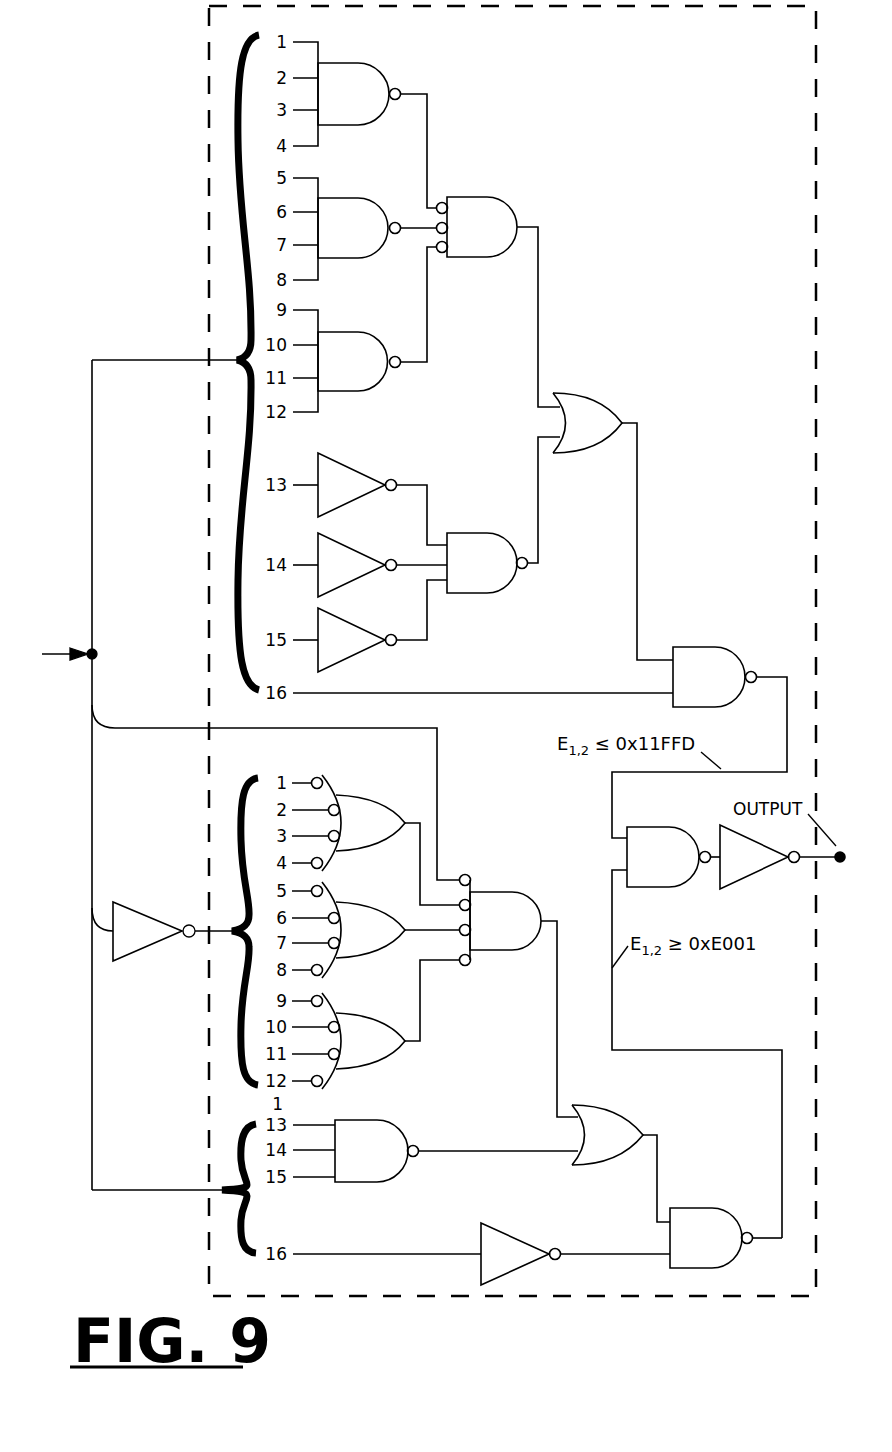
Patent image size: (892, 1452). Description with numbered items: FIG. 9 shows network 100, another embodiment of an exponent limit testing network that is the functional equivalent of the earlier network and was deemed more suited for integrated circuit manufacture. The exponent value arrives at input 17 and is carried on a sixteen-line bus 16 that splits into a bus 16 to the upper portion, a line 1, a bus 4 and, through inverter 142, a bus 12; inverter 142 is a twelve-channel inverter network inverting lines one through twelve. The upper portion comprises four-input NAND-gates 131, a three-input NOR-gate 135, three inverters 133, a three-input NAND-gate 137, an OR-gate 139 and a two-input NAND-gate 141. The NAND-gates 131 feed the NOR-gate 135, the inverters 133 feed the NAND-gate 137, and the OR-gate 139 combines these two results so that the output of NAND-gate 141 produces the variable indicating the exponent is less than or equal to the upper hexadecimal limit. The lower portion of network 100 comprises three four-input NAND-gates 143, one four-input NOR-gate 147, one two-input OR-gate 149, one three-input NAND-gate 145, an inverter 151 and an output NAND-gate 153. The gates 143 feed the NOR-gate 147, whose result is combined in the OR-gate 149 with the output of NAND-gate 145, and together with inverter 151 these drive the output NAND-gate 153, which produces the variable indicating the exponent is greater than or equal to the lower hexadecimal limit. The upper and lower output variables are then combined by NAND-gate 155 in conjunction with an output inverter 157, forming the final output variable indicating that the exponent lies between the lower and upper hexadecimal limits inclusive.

The input signal E1,2 17 is at (62, 650).
The 16-bit bus 16 is at (135, 372).
The single-bit line 1 is at (133, 742).
The 4-bit bus 4 is at (80, 1103).
The 12-bit bus 12 is at (216, 926).
The network 100 is at (779, 46).
The 4-input NAND-gates 131 is at (365, 227).
The inverters 133 is at (370, 562).
The 3-input NOR-gate 135 is at (499, 302).
The 3-input NAND-gate 137 is at (503, 515).
The OR-gate 139 is at (613, 526).
The 2-input NAND-gate 141 is at (540, 742).
The inverter 142 is at (143, 931).
The 4-input NAND-gates 143 is at (376, 932).
The 3-input NAND-gate 145 is at (435, 1151).
The 4-input NOR-gate 147 is at (519, 996).
The 2-input OR-gate 149 is at (621, 1163).
The inverter 151 is at (481, 1254).
The output NAND-gate 153 is at (726, 1238).
The NAND-gate 155 is at (697, 1032).
The inverter 157 is at (782, 857).